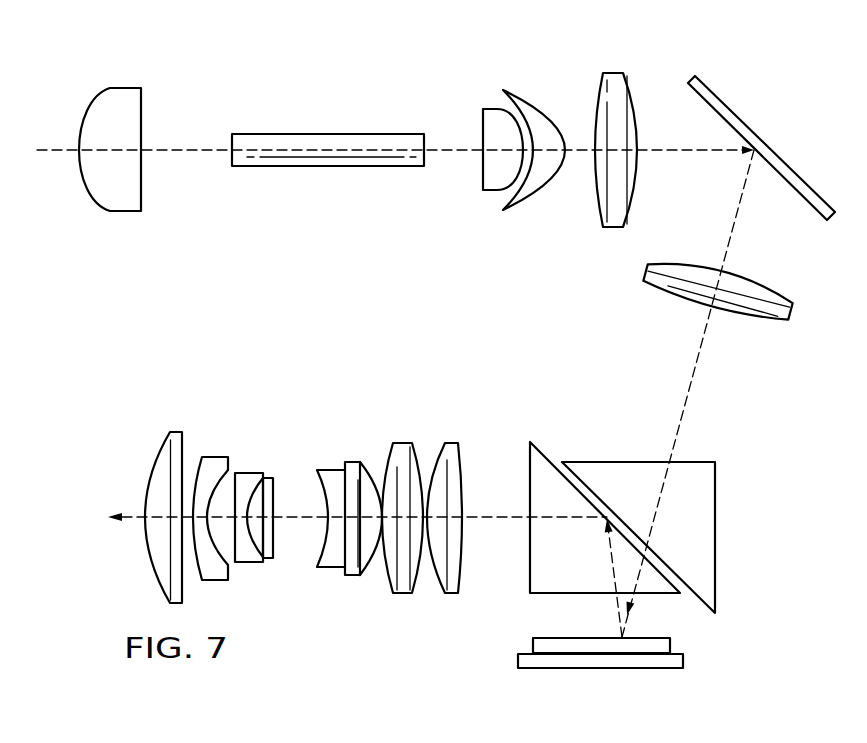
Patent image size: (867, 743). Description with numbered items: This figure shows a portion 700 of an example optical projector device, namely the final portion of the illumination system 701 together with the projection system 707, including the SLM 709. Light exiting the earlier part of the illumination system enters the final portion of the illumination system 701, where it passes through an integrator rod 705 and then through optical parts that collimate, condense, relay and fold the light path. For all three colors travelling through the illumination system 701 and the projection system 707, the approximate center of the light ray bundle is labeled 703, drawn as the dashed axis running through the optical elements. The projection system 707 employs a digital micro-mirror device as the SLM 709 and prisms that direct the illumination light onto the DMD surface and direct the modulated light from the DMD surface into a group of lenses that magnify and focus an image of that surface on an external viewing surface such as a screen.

The portion of the optical projector device 700 is at (233, 63).
The illumination system 701 is at (834, 334).
The center of the light ray bundle 703 is at (53, 150).
The integrator rod 705 is at (327, 134).
The projection system 707 is at (712, 425).
The SLM 709 is at (692, 668).